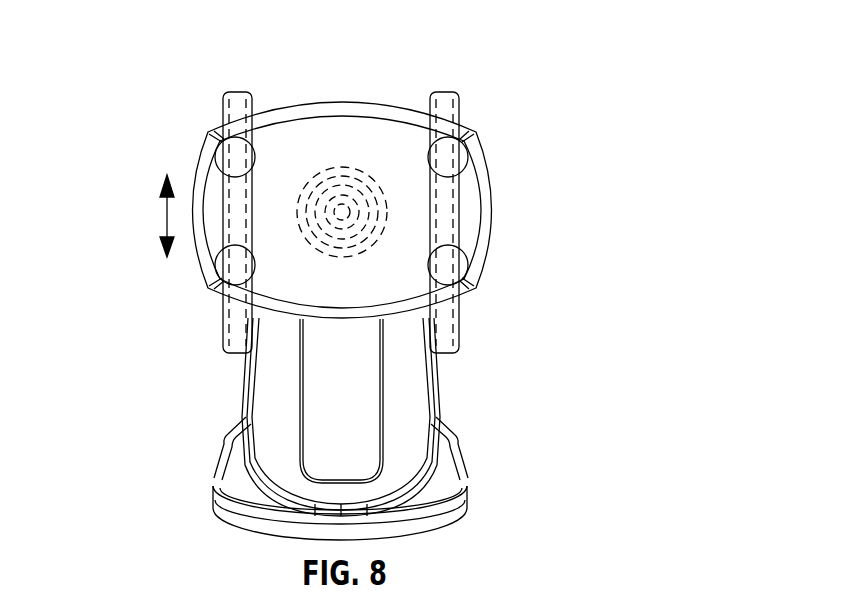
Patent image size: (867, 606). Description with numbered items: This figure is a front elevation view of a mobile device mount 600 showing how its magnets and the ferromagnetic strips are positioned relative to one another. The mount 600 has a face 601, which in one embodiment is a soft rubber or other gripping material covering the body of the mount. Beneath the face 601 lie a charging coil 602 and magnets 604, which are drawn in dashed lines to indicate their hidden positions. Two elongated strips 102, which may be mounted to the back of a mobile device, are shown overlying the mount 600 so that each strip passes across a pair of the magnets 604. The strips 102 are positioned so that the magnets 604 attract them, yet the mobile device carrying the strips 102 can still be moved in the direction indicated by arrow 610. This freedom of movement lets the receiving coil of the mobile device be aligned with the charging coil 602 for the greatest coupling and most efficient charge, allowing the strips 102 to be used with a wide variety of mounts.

The mobile device mount 600 is at (486, 44).
The face 601 is at (328, 142).
The charging coil 602 is at (350, 163).
The magnets 604 is at (222, 166).
The arrow 610 is at (165, 215).
The strips 102 is at (222, 330).